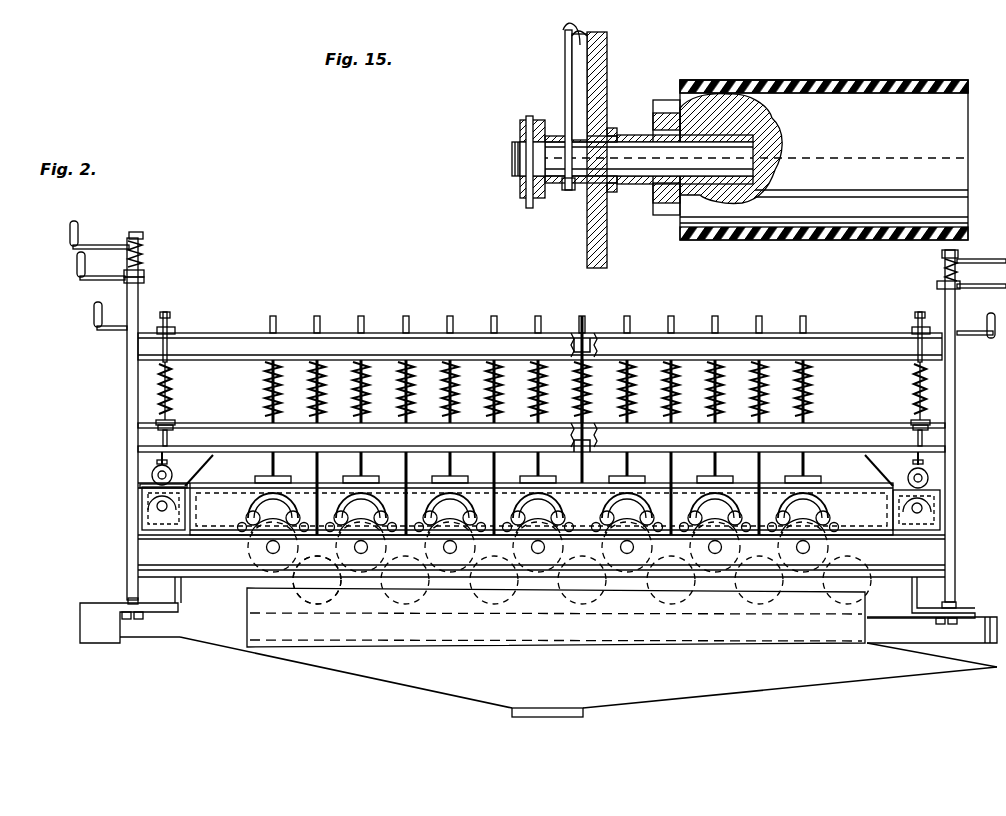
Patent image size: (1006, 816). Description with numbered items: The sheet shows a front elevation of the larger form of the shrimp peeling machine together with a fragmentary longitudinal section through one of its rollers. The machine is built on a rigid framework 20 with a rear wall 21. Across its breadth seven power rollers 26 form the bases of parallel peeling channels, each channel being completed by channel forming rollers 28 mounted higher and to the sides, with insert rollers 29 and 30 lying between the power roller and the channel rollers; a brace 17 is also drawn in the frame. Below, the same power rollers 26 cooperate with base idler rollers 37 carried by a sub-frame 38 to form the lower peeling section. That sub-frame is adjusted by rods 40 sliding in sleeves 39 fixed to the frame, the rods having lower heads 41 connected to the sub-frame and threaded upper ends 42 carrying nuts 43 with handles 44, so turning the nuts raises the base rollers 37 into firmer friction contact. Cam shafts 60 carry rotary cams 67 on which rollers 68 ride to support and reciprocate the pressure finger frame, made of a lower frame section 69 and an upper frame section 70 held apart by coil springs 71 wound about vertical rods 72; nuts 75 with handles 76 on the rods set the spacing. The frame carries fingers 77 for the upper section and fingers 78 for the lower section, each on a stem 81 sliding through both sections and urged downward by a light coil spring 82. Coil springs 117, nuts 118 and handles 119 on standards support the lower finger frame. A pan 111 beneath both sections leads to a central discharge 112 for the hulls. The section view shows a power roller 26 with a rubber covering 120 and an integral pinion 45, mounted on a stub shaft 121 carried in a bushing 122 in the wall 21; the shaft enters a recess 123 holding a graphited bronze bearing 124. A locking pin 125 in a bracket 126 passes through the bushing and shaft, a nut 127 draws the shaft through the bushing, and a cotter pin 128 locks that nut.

In FIG. 2, the diagonal brace 17 is at (231, 482).
In FIG. 2, the rigid framework 20 is at (138, 488).
In FIG. 15, the rear wall 21 is at (607, 226).
In FIG. 2, the power roller 26 is at (250, 541).
In FIG. 15, the power roller 26 is at (915, 97).
In FIG. 2, the channel forming roller 28 is at (313, 480).
In FIG. 2, the insert roller 29 is at (348, 510).
In FIG. 2, the insert roller 30 is at (408, 492).
In FIG. 2, the base idler roller 37 is at (352, 572).
In FIG. 2, the sub-frame 38 is at (180, 582).
In FIG. 2, the vertical sleeve 39 is at (127, 440).
In FIG. 2, the rod 40 is at (126, 600).
In FIG. 2, the lower head 41 is at (140, 620).
In FIG. 2, the screw threaded portion 42 is at (145, 273).
In FIG. 2, the nut 43 is at (147, 280).
In FIG. 2, the handle 44 is at (78, 272).
In FIG. 15, the pinion 45 is at (660, 102).
In FIG. 2, the cam shaft 60 is at (156, 510).
In FIG. 2, the rotary cam 67 is at (140, 497).
In FIG. 2, the roller 68 is at (152, 472).
In FIG. 2, the lower frame section 69 is at (234, 428).
In FIG. 2, the upper frame section 70 is at (240, 340).
In FIG. 2, the coil spring 71 is at (172, 385).
In FIG. 2, the vertical rod 72 is at (178, 426).
In FIG. 2, the nut 75 is at (176, 331).
In FIG. 2, the handle 76 is at (92, 318).
In FIG. 2, the finger 77 is at (556, 490).
In FIG. 2, the finger 78 is at (770, 482).
In FIG. 2, the stem 81 is at (408, 322).
In FIG. 2, the light coil spring 82 is at (486, 375).
In FIG. 2, the pan 111 is at (660, 702).
In FIG. 2, the discharge 112 is at (545, 717).
In FIG. 2, the coil spring 117 is at (144, 262).
In FIG. 2, the nut 118 is at (143, 236).
In FIG. 2, the handle 119 is at (103, 244).
In FIG. 15, the rubber covering 120 is at (737, 82).
In FIG. 15, the stub shaft 121 is at (720, 170).
In FIG. 15, the bushing 122 is at (578, 188).
In FIG. 15, the recess 123 is at (760, 160).
In FIG. 15, the graphited bronze bearing 124 is at (731, 149).
In FIG. 15, the locking pin 125 is at (564, 70).
In FIG. 15, the bracket 126 is at (562, 28).
In FIG. 15, the nut 127 is at (530, 205).
In FIG. 15, the cotter pin 128 is at (535, 122).